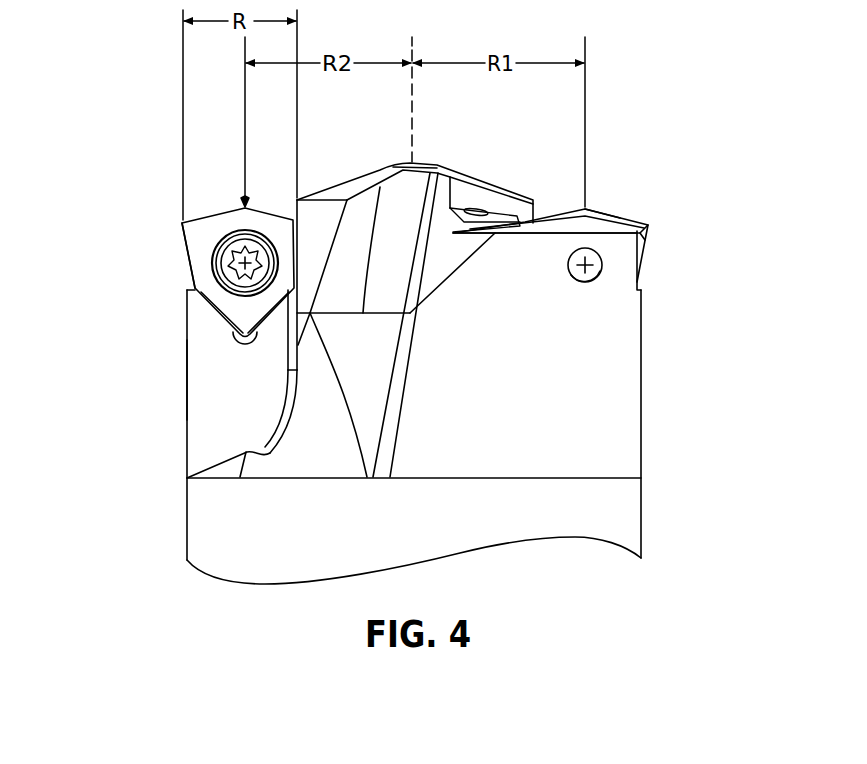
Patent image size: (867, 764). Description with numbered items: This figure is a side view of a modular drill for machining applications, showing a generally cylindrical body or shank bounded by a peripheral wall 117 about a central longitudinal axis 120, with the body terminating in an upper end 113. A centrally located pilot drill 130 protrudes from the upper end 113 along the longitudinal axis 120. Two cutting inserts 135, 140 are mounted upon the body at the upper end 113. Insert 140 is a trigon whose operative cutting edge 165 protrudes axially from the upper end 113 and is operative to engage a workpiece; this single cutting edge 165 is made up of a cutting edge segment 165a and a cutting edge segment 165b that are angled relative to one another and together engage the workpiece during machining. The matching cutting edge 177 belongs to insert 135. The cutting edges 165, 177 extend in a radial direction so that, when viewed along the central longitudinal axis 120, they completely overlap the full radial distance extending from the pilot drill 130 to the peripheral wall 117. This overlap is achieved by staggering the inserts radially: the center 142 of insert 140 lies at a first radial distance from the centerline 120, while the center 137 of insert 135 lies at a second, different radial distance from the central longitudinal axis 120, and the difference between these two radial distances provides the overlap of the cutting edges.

The upper end 113 is at (600, 433).
The peripheral wall 117 is at (187, 373).
The central longitudinal axis 120 is at (414, 41).
The pilot drill 130 is at (362, 176).
The cutting insert 135 is at (188, 265).
The center of insert 135 137 is at (233, 265).
The cutting insert 140 is at (643, 249).
The center of insert 140 142 is at (588, 265).
The cutting edge 165 is at (574, 207).
The cutting edge segment 165a is at (548, 217).
The cutting edge segment 165b is at (604, 212).
The cutting edge 177 is at (230, 210).